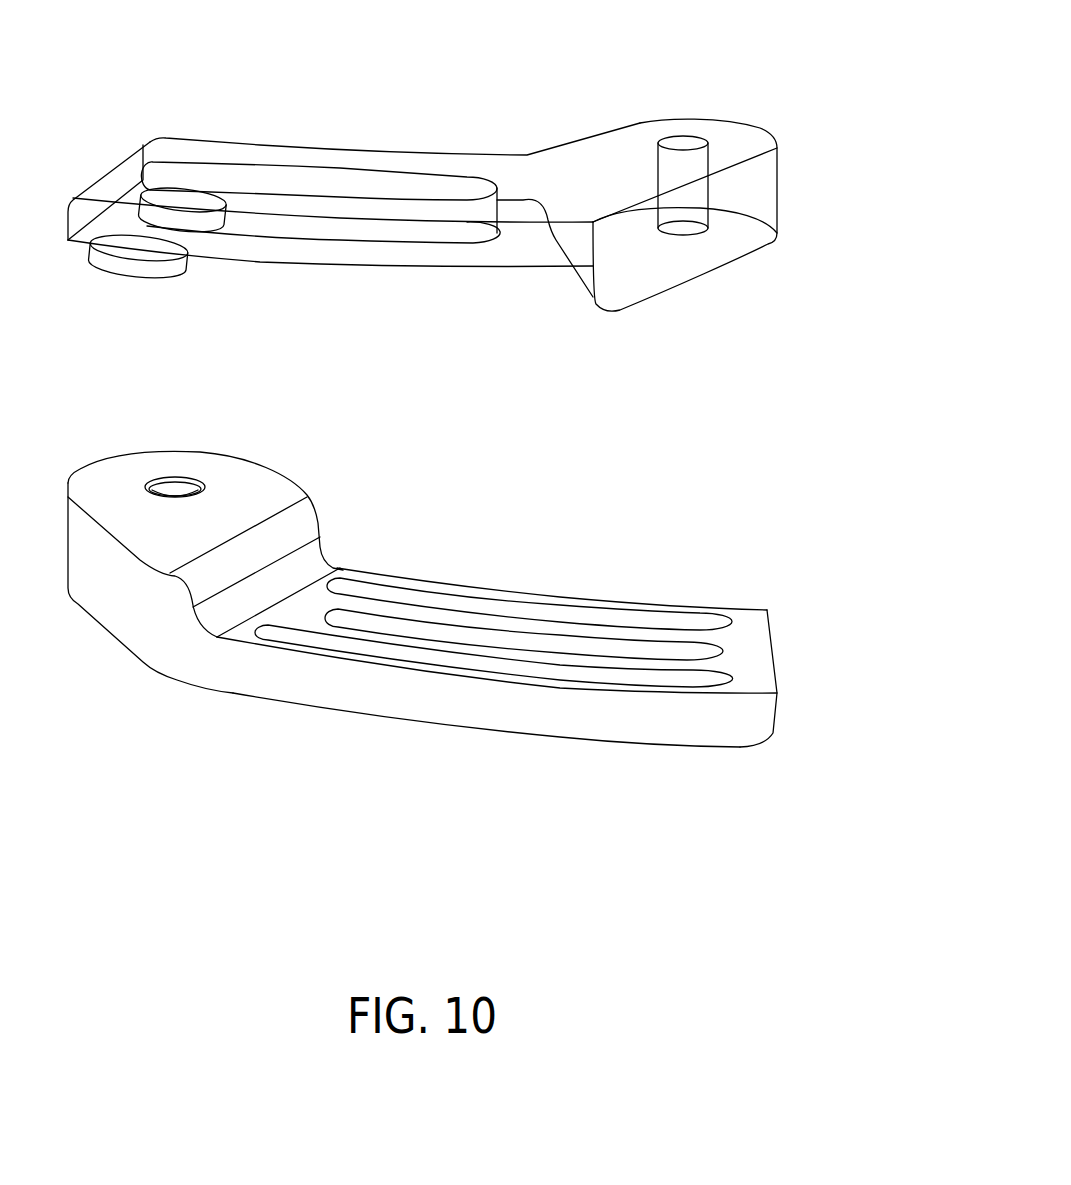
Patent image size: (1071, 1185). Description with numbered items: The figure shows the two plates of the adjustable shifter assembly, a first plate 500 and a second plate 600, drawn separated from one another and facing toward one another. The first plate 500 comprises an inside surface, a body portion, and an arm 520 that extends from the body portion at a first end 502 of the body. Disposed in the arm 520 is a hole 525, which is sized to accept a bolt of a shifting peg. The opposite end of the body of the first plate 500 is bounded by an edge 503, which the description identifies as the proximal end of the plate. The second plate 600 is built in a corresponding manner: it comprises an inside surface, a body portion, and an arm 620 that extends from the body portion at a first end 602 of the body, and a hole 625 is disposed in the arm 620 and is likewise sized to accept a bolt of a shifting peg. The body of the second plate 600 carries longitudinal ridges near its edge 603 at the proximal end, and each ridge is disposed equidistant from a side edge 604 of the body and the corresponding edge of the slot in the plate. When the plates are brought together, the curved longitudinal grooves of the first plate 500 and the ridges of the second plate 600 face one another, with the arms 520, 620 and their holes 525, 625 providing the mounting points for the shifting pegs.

The first plate 500 is at (345, 162).
The first end 502 is at (587, 273).
The edge 503 is at (110, 173).
The arm 520 is at (640, 130).
The hole 525 is at (730, 128).
The second plate 600 is at (322, 700).
The first end 602 is at (282, 563).
The edge 603 is at (778, 650).
The edge 604 is at (412, 716).
The arm 620 is at (115, 470).
The hole 625 is at (205, 485).